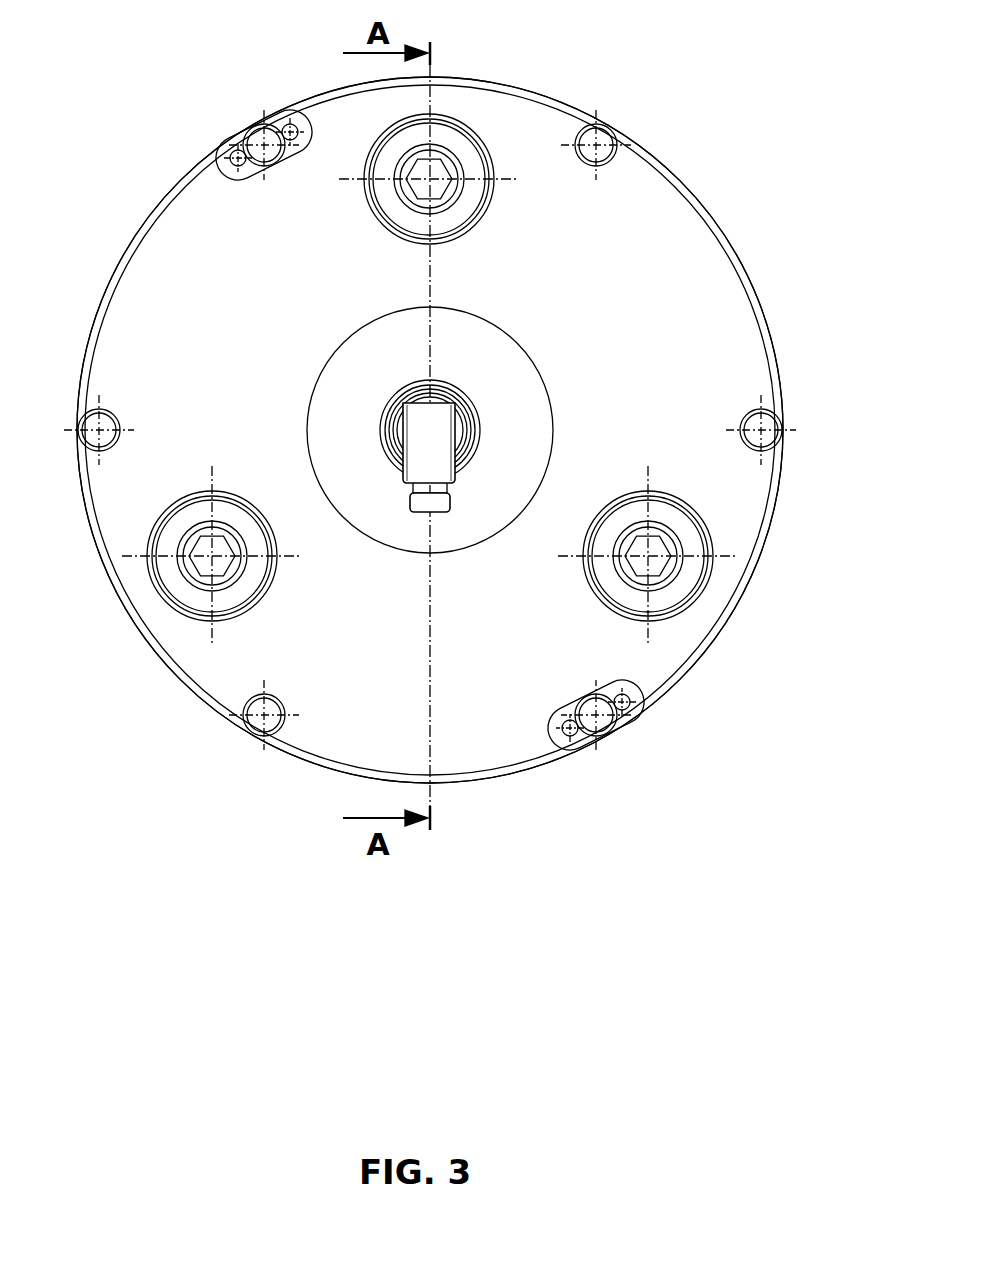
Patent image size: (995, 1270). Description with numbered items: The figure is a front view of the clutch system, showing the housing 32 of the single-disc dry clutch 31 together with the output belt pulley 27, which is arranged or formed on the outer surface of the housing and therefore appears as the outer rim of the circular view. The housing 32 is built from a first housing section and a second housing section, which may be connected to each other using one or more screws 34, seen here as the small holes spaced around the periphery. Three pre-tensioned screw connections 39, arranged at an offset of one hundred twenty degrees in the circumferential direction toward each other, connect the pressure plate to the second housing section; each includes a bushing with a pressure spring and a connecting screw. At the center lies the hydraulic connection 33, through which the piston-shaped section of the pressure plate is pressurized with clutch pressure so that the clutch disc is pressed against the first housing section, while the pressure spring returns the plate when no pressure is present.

The output belt pulley 27 is at (343, 87).
The single-disc dry clutch 31 is at (118, 181).
The housing 32 is at (230, 672).
The hydraulic connection 33 is at (417, 432).
The screws 34 is at (600, 138).
The pre-tensioned screw connections 39 is at (452, 143).